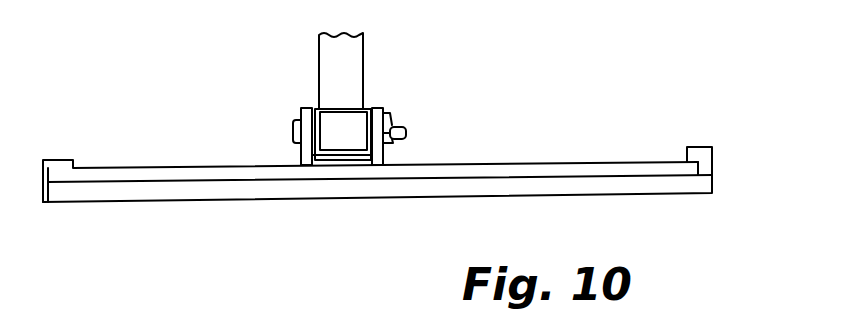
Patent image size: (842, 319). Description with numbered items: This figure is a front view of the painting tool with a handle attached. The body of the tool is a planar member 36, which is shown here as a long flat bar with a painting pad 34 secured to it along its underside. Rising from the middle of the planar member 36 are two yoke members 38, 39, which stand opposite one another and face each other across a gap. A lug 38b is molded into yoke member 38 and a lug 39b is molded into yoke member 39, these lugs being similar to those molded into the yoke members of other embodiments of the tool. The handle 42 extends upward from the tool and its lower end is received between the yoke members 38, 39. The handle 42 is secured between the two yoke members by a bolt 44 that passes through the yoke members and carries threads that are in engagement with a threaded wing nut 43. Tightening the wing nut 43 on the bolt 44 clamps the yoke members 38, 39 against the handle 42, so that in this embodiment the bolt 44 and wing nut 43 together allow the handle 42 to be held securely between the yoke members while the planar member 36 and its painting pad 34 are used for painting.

The painting pad 34 is at (665, 183).
The planar member 36 is at (190, 177).
The yoke member 38 is at (379, 158).
The lug 38b is at (368, 110).
The yoke member 39 is at (297, 153).
The lug 39b is at (318, 108).
The handle 42 is at (330, 46).
The wing nut 43 is at (392, 118).
The bolt 44 is at (407, 133).